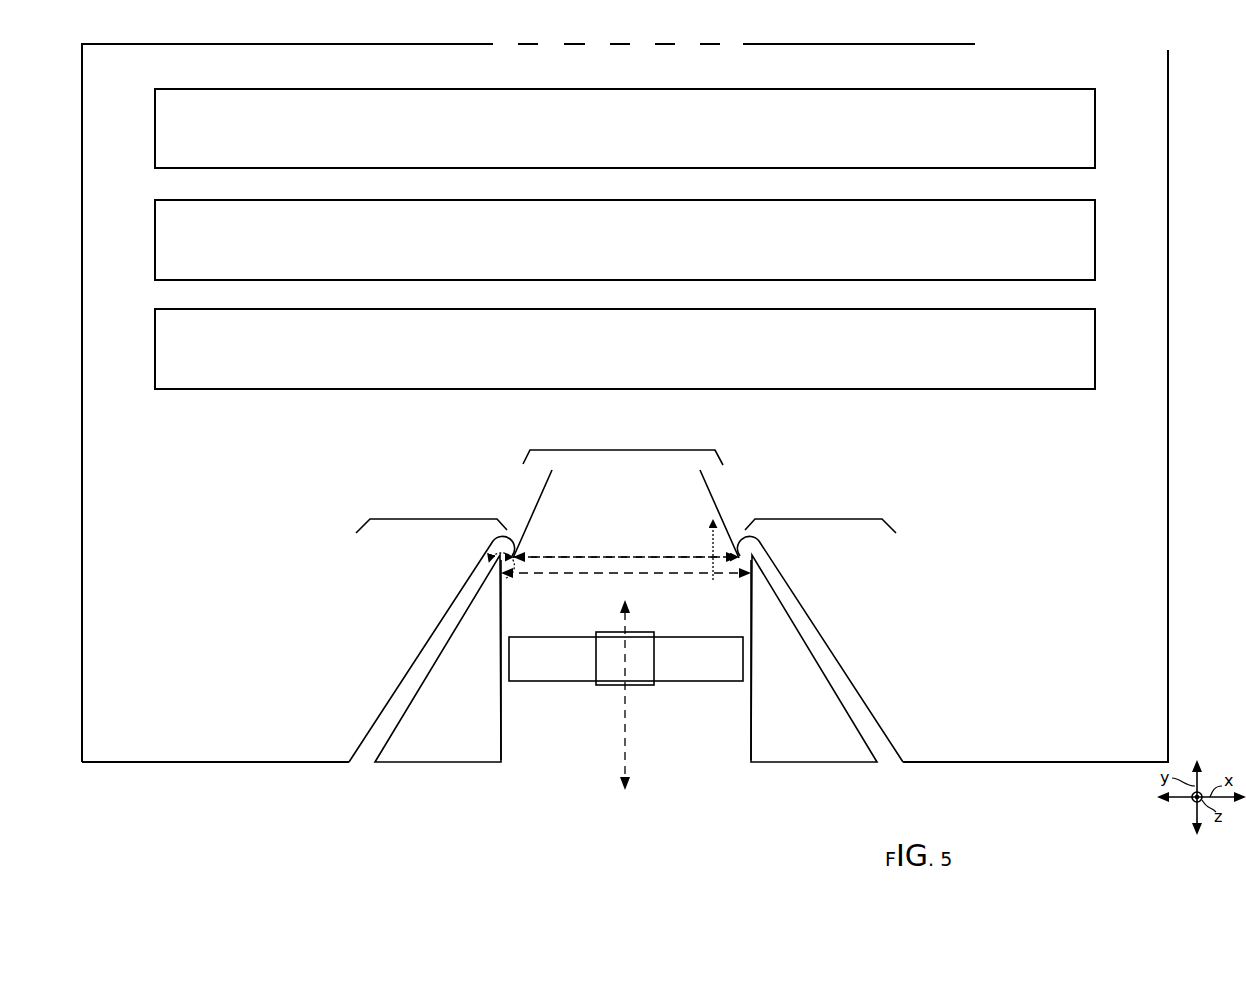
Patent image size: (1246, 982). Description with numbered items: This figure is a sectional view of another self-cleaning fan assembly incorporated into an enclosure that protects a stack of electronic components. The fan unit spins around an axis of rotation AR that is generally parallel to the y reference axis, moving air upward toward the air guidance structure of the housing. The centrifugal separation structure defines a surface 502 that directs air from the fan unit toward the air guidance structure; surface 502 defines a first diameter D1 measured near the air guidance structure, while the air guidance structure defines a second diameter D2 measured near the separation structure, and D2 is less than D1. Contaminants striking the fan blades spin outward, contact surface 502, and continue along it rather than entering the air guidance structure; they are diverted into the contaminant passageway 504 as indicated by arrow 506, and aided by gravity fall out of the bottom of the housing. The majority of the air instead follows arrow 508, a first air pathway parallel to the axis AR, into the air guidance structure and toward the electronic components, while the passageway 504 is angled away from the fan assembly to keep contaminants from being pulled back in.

The contaminant passageway 504 is at (943, 711).
The surface 502 is at (501, 612).
The arrow 506 is at (506, 580).
The arrow 508 is at (712, 540).
The second diameter D2 is at (546, 557).
The first diameter D1 is at (565, 573).
The axis of rotation AR is at (625, 730).